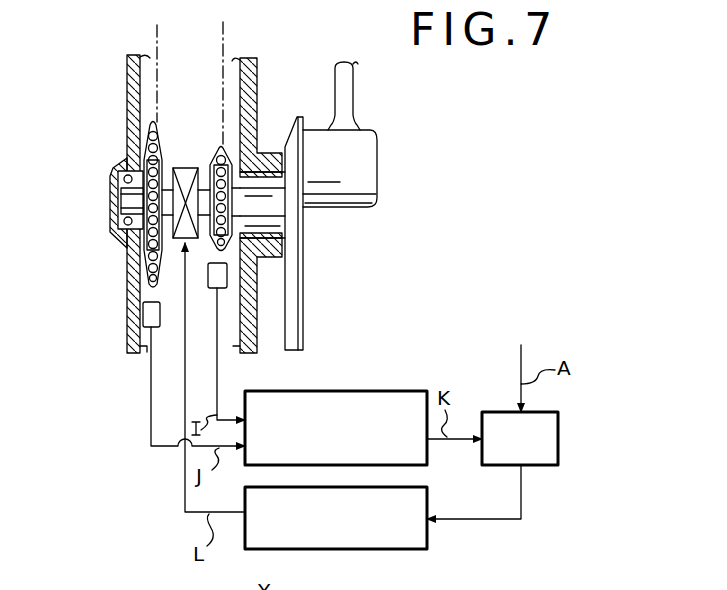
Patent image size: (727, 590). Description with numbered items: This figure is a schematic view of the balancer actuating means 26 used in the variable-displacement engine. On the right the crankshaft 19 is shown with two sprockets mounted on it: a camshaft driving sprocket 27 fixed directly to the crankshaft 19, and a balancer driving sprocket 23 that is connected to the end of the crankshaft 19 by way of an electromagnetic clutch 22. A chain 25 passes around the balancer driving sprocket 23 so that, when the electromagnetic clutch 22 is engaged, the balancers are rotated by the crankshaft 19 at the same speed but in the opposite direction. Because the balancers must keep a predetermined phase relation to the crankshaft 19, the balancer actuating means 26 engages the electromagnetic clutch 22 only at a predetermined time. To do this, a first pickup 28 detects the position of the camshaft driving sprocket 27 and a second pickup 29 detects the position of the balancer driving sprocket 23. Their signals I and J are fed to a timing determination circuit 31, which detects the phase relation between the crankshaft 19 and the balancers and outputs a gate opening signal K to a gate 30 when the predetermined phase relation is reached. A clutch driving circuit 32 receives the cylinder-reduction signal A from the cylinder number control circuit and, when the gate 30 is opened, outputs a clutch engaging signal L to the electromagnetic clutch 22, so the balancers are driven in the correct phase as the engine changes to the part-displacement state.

The crankshaft 19 is at (362, 177).
The electromagnetic clutch 22 is at (180, 167).
The balancer driving sprocket 23 is at (127, 148).
The chain 25 is at (157, 33).
The balancer actuating means 26 is at (182, 528).
The camshaft driving sprocket 27 is at (216, 166).
The first pickup 28 is at (208, 275).
The second pickup 29 is at (143, 315).
The gate 30 is at (558, 445).
The timing determination circuit 31 is at (341, 391).
The clutch driving circuit 32 is at (390, 549).